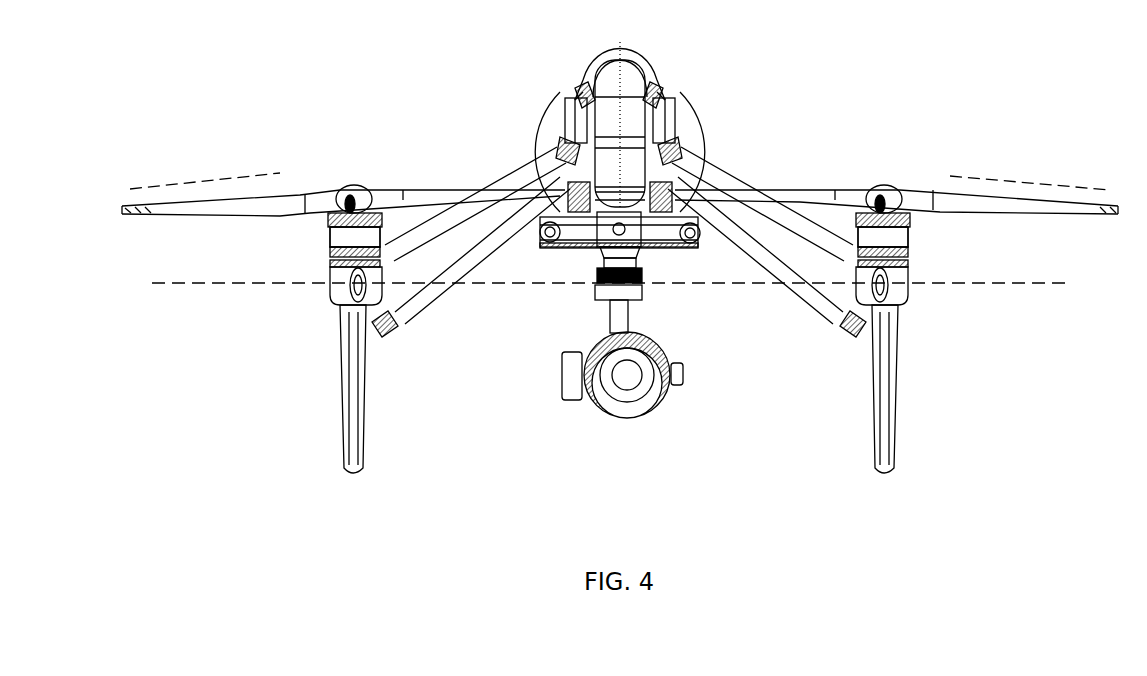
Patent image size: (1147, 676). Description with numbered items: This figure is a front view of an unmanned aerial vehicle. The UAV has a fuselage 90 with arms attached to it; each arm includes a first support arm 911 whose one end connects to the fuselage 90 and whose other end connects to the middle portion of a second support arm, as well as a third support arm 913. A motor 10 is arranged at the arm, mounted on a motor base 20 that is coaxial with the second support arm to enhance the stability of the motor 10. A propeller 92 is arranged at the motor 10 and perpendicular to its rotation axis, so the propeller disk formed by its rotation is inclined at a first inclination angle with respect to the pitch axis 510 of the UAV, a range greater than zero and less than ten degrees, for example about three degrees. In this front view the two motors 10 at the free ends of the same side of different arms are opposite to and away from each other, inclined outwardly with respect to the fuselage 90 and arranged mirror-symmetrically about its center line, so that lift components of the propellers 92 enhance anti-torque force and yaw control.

The fuselage 90 is at (655, 152).
The first support arm 911 is at (528, 165).
The third support arm 913 is at (422, 287).
The propeller 92 is at (348, 186).
The motor 10 is at (330, 238).
The motor base 20 is at (332, 287).
The pitch axis 510 is at (1015, 280).